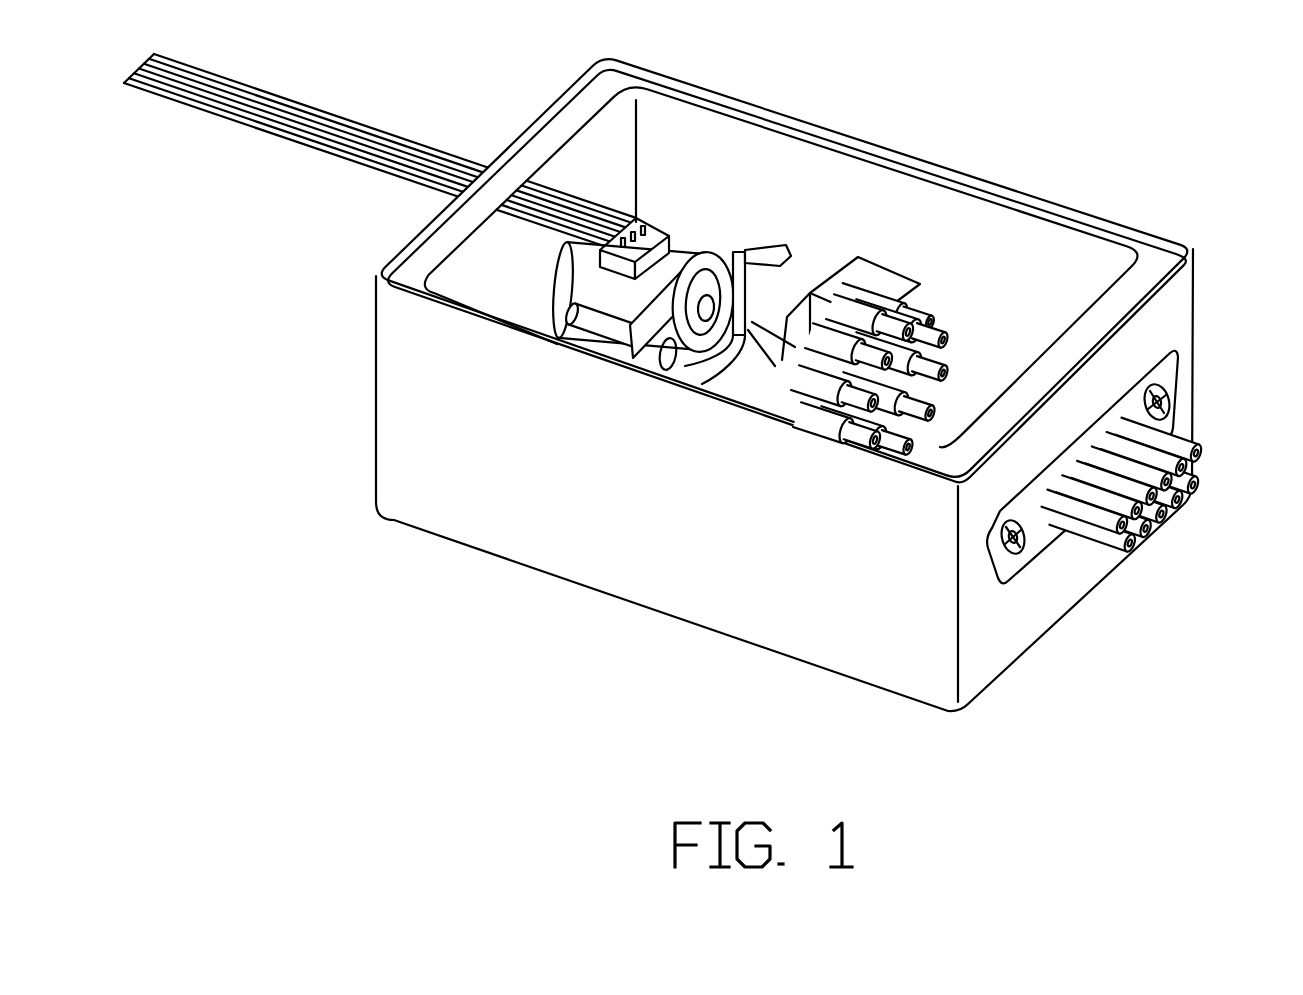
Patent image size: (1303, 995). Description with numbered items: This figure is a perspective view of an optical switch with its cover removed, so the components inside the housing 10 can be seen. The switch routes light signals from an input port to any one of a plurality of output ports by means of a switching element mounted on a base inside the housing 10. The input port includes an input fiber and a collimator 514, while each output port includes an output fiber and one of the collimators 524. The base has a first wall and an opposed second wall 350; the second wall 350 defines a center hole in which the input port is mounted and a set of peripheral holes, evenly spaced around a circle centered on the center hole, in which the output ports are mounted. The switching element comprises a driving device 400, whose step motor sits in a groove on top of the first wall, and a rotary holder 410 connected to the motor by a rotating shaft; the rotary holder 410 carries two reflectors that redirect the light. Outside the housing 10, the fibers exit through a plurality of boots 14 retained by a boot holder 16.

The housing 10 is at (427, 503).
The boots 14 is at (1105, 525).
The boot holder 16 is at (1138, 398).
The second wall 350 is at (833, 275).
The driving device 400 is at (583, 277).
The rotary holder 410 is at (746, 262).
The collimator 514 is at (918, 410).
The collimators 524 is at (890, 298).